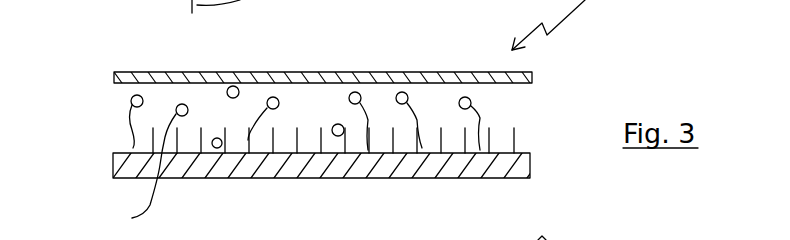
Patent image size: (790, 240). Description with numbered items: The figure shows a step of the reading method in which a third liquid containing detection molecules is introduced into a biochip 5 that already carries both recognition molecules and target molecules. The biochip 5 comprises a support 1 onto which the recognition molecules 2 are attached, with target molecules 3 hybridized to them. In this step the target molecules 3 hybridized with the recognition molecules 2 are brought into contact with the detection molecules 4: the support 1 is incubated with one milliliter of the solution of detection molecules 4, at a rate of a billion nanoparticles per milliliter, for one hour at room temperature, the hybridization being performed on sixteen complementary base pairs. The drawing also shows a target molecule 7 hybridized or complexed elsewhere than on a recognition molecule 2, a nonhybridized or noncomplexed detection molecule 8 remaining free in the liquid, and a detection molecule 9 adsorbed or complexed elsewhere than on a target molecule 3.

The support 1 is at (297, 170).
The recognition molecule 2 is at (515, 132).
The target molecule 3 is at (131, 101).
The detection molecule 4 is at (143, 101).
The biochip 5 is at (558, 239).
The target molecule hybridized or complexed elsewhere than on a recognition molecule 7 is at (480, 113).
The nonhybridized or noncomplexed detection molecule 8 is at (152, 166).
The detection molecule adsorbed or complexed elsewhere than on a target molecule 9 is at (240, 96).